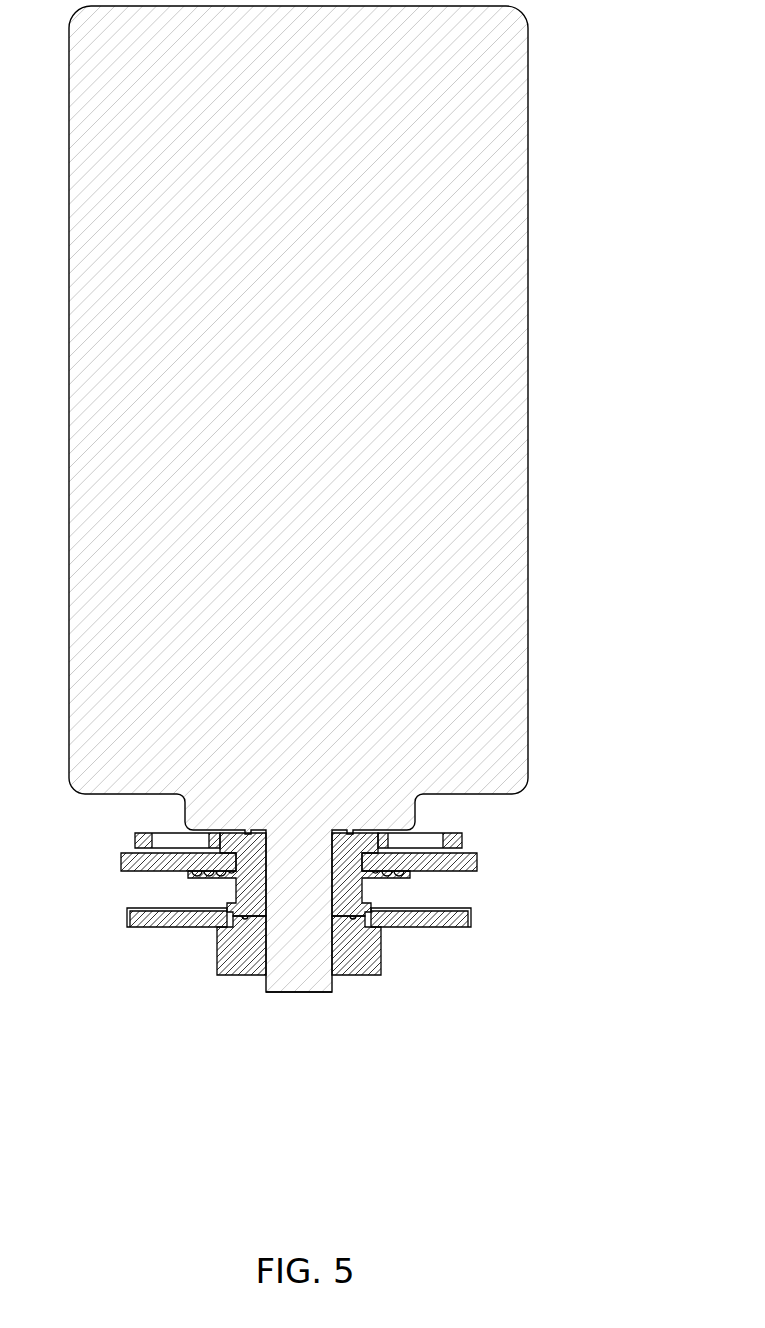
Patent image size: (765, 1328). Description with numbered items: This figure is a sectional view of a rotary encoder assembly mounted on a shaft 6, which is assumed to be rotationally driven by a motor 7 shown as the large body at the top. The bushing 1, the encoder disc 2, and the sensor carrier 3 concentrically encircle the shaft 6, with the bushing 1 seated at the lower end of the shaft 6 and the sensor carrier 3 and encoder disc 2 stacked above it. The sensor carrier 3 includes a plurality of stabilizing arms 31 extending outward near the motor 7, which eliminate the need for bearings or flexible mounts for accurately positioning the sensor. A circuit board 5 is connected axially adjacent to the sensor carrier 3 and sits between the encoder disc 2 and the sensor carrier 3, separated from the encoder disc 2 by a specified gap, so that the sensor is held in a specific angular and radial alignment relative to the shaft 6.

The motor 7 is at (515, 598).
The stabilizing arms 31 is at (178, 834).
The sensor carrier 3 is at (343, 887).
The encoder disc 2 is at (137, 908).
The circuit board 5 is at (473, 918).
The bushing 1 is at (373, 963).
The shaft 6 is at (308, 983).